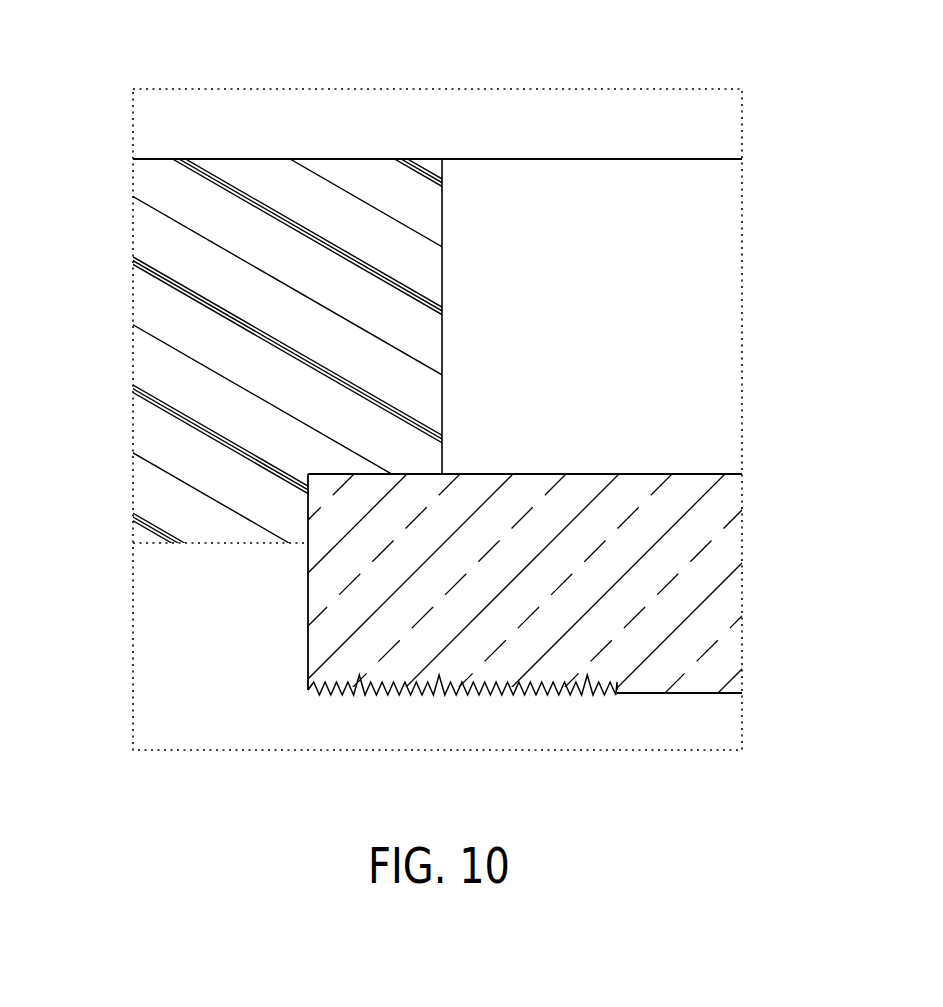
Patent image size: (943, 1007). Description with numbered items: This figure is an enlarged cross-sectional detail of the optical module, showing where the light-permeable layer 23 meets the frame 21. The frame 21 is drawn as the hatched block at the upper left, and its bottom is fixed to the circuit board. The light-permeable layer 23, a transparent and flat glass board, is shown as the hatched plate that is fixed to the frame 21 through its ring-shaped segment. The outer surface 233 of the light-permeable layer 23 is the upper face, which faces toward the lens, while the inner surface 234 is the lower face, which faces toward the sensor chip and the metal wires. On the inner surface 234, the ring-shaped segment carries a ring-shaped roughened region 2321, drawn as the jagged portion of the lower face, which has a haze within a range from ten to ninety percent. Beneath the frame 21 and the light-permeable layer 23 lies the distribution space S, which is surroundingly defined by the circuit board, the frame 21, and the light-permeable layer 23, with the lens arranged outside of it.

The frame 21 is at (138, 343).
The light-permeable layer 23 is at (535, 603).
The outer surface 233 is at (718, 465).
The inner surface 234 is at (713, 703).
The ring-shaped roughened region 2321 is at (494, 705).
The distribution space S is at (175, 666).